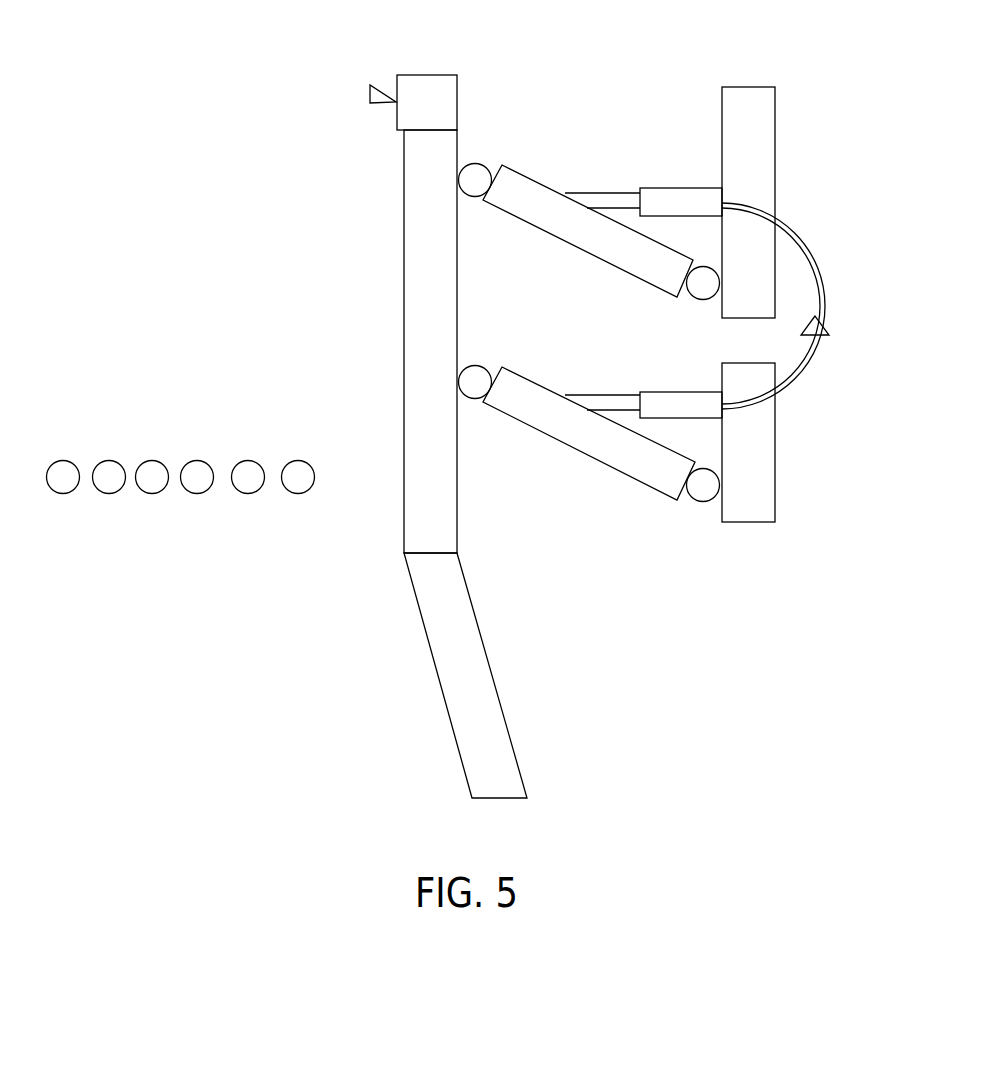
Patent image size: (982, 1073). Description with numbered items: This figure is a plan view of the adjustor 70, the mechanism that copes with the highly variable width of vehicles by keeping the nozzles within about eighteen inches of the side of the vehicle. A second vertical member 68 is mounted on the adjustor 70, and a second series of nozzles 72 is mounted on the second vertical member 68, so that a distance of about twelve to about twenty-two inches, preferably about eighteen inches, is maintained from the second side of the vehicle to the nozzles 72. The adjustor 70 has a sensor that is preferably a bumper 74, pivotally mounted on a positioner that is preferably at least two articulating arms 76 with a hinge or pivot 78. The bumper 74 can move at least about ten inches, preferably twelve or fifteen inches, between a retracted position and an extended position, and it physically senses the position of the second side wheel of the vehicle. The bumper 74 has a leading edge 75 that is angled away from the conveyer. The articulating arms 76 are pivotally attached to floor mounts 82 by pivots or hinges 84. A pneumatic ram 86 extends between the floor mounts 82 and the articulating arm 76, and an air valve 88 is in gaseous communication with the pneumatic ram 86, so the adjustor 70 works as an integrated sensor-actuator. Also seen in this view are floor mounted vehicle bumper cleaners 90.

The adjustor 70 is at (600, 64).
The second vertical member 68 is at (443, 95).
The second series of nozzles 72 is at (370, 93).
The bumper 74 is at (422, 525).
The leading edge 75 is at (445, 695).
The articulating arms 76 is at (543, 200).
The pivot 78 is at (480, 175).
The floor mounts 82 is at (755, 118).
The pivots 84 is at (703, 487).
The pneumatic ram 86 is at (675, 200).
The air valve 88 is at (818, 328).
The vehicle bumper cleaners 90 is at (250, 480).